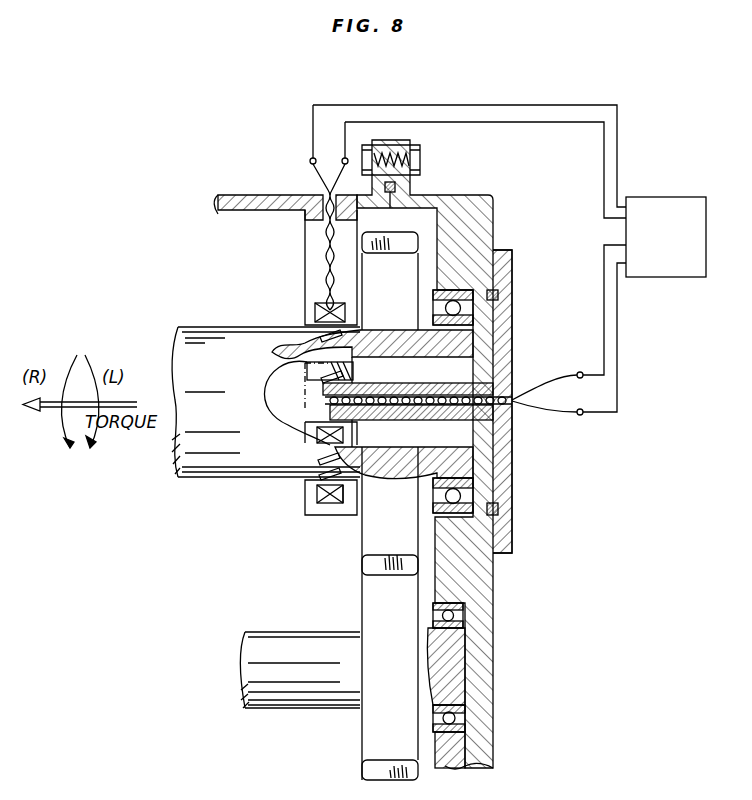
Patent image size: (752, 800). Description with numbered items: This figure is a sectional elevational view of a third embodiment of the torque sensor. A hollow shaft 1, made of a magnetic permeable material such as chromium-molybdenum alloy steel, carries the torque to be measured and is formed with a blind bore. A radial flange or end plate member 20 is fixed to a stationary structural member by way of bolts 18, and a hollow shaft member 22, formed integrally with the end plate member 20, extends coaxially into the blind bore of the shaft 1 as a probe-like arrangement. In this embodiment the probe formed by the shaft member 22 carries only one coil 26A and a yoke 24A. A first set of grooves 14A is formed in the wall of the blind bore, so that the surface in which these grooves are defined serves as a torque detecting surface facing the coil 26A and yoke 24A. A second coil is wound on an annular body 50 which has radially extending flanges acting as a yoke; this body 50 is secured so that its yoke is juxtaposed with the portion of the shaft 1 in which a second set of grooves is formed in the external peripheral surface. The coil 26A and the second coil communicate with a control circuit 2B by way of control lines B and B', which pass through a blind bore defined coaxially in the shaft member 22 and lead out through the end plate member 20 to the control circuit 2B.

The hollow shaft 1 is at (192, 326).
The control circuit 2B is at (660, 196).
The first set of grooves 14A is at (320, 378).
The bolts 18 is at (523, 534).
The radial flange or end plate member 20 is at (507, 470).
The hollow shaft member 22 is at (413, 384).
The yoke 24A is at (368, 458).
The coil 26A is at (317, 440).
The annular body 50 is at (322, 510).
The control line B is at (450, 410).
The control line B' is at (303, 237).